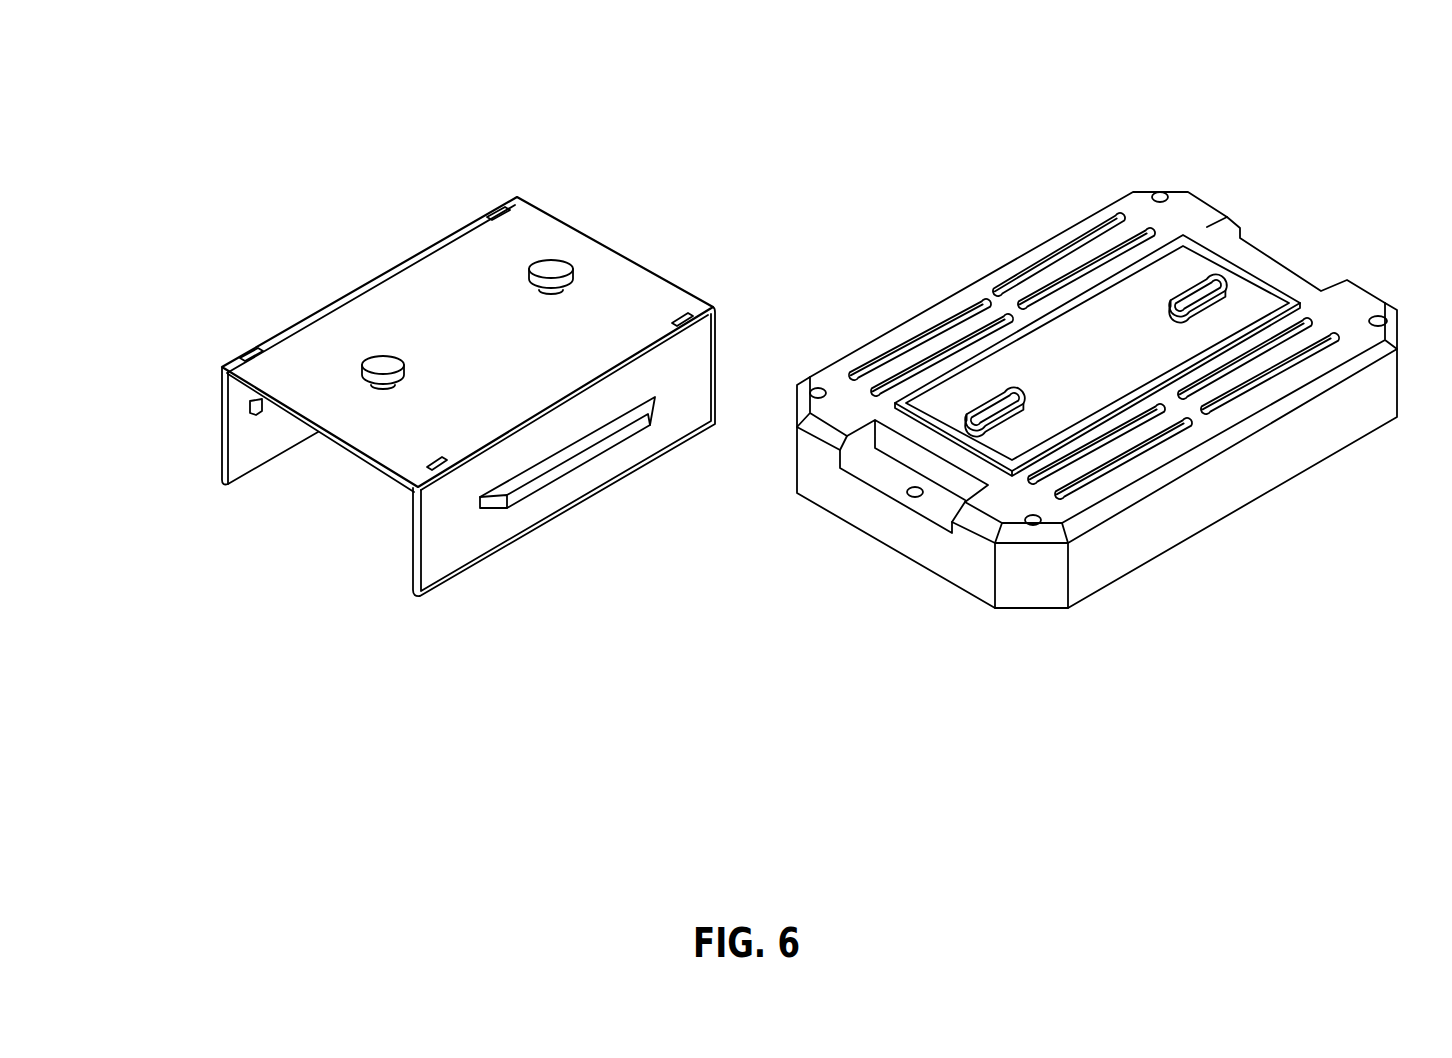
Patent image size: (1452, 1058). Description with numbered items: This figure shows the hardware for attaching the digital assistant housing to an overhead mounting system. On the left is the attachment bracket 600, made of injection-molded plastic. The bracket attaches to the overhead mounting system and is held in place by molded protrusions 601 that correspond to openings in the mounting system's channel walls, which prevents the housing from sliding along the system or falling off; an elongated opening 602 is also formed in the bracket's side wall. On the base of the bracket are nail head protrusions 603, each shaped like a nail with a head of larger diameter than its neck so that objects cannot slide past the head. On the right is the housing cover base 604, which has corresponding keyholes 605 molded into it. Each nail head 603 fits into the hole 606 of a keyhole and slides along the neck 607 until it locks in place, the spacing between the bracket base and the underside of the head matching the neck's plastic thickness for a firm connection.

The attachment bracket 600 is at (456, 228).
The molded protrusions 601 is at (260, 415).
The slot 602 is at (551, 480).
The nail head protrusion 603 is at (553, 268).
The housing cover base 604 is at (1063, 230).
The keyhole 605 is at (1207, 312).
The hole 606 is at (1180, 302).
The neck 607 is at (1210, 288).